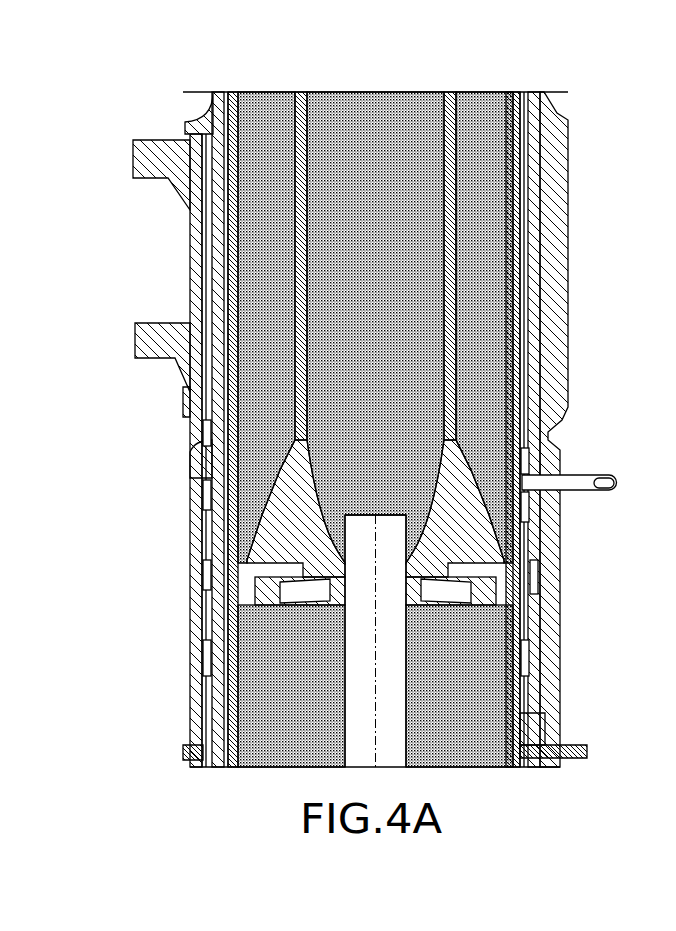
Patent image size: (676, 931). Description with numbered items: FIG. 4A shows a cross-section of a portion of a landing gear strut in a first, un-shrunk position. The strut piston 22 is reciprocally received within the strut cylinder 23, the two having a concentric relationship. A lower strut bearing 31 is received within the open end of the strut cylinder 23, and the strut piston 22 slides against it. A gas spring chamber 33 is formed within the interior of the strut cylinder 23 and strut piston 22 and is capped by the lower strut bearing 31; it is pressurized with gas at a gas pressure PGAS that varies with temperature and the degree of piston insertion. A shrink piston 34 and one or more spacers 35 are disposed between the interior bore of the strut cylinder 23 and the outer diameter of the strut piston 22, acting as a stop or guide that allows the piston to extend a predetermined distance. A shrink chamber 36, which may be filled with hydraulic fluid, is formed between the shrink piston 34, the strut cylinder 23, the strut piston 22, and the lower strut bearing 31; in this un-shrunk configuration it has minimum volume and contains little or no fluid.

The gas pressure PGAS is at (183, 122).
The strut piston 22 is at (523, 673).
The strut cylinder 23 is at (555, 112).
The lower strut bearing 31 is at (203, 672).
The gas spring chamber 33 is at (262, 252).
The shrink piston 34 is at (202, 446).
The spacers 35 is at (186, 330).
The shrink chamber 36 is at (207, 484).